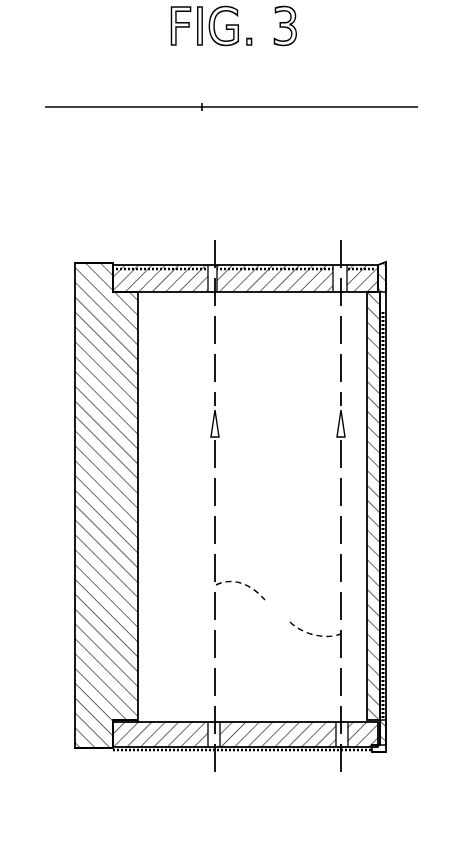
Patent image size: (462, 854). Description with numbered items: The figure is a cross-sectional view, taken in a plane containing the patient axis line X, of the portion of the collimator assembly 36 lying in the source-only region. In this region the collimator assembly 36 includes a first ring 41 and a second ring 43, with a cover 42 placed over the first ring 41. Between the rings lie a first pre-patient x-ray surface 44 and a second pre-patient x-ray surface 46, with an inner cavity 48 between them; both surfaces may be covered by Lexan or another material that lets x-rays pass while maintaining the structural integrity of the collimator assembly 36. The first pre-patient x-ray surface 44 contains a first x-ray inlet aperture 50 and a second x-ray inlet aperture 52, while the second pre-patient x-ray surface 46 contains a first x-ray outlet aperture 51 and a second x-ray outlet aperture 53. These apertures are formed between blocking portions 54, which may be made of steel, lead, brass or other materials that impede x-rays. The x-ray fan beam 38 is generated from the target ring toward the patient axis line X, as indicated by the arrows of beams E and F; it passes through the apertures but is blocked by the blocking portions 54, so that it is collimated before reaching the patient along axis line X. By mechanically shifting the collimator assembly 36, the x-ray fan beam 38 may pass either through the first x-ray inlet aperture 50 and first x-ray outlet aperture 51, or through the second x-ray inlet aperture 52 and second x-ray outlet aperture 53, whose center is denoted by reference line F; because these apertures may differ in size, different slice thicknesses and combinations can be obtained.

The collimator assembly 36 is at (50, 420).
The x-ray fan beam 38 is at (278, 608).
The first ring 41 is at (380, 547).
The cover 42 is at (387, 521).
The second ring 43 is at (87, 506).
The first pre-patient x-ray surface 44 is at (148, 750).
The second pre-patient x-ray surface 46 is at (265, 264).
The inner cavity 48 is at (305, 453).
The first x-ray inlet aperture 50 is at (214, 758).
The first x-ray outlet aperture 51 is at (209, 268).
The second x-ray inlet aperture 52 is at (340, 757).
The second x-ray outlet aperture 53 is at (334, 268).
The blocking portions 54 is at (153, 272).
The axis line X is at (78, 108).
The beam E is at (212, 383).
The beam F is at (337, 383).